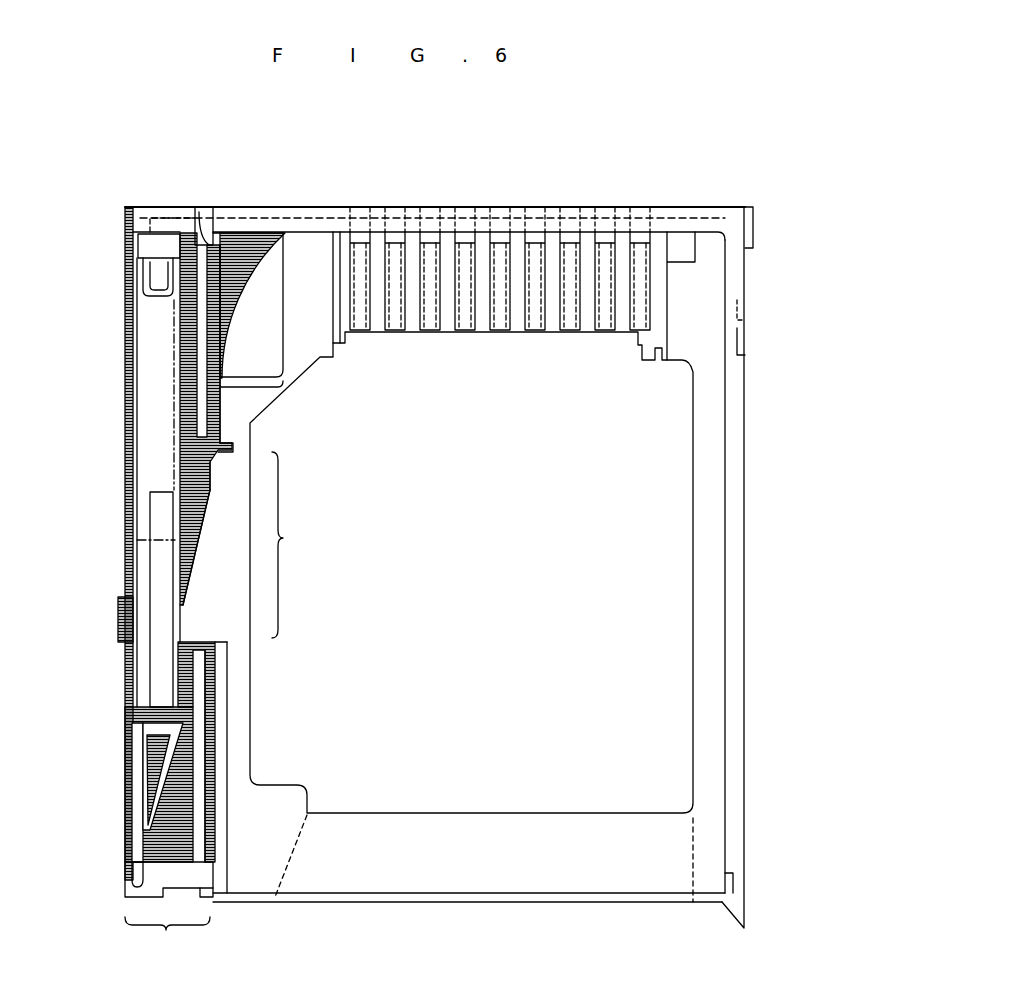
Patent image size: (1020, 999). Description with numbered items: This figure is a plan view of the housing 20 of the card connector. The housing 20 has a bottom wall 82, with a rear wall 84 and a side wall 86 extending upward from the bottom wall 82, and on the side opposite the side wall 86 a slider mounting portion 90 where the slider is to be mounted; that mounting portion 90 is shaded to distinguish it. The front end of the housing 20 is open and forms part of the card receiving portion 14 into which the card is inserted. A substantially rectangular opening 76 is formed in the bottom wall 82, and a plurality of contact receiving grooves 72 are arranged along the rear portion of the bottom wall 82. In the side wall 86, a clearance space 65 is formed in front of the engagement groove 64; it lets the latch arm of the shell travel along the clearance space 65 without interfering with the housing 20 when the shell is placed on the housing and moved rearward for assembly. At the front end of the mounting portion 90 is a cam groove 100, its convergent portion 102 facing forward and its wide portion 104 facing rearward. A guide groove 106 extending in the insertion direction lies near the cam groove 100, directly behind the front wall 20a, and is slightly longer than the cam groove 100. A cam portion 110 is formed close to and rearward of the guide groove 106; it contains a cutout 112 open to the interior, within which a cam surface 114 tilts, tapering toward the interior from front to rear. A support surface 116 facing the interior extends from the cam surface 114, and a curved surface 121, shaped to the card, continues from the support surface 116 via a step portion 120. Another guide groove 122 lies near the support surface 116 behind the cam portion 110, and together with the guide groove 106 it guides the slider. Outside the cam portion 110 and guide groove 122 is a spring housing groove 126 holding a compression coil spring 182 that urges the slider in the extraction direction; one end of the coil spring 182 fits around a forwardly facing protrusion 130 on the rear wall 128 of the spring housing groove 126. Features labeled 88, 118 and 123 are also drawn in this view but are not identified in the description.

The housing 20 is at (490, 158).
The front wall 20a is at (210, 898).
The card receiving portion 14 is at (582, 903).
The engagement groove 64 is at (741, 312).
The clearance space 65 is at (742, 352).
The contact receiving grooves 72 is at (487, 335).
The opening 76 is at (484, 814).
The bottom wall 82 is at (583, 337).
The rear wall 84 is at (538, 207).
The side wall 86 is at (743, 483).
The bottom plate 88 is at (665, 858).
The slider mounting portion 90 is at (167, 938).
The cam groove 100 is at (135, 812).
The convergent portion 102 is at (137, 885).
The wide portion 104 is at (135, 747).
The guide groove 106 is at (205, 835).
The cam portion 110 is at (302, 545).
The cutout 112 is at (212, 612).
The cam surface 114 is at (203, 553).
The support surface 116 is at (210, 497).
The slider arm 118 is at (210, 676).
The step portion 120 is at (233, 455).
The curved surface 121 is at (234, 312).
The guide groove 122 is at (197, 343).
The cam surface 123 is at (224, 371).
The spring housing groove 126 is at (150, 464).
The rear wall 128 is at (136, 268).
The protrusion 130 is at (204, 207).
The compression coil spring 182 is at (148, 323).